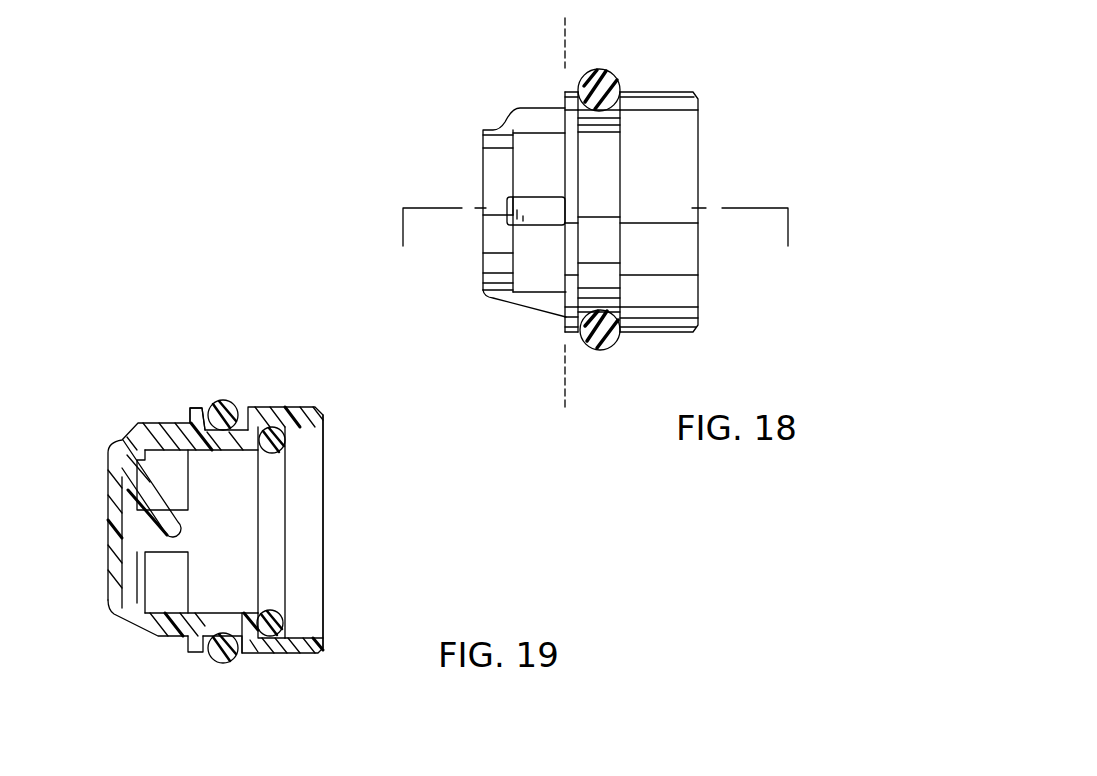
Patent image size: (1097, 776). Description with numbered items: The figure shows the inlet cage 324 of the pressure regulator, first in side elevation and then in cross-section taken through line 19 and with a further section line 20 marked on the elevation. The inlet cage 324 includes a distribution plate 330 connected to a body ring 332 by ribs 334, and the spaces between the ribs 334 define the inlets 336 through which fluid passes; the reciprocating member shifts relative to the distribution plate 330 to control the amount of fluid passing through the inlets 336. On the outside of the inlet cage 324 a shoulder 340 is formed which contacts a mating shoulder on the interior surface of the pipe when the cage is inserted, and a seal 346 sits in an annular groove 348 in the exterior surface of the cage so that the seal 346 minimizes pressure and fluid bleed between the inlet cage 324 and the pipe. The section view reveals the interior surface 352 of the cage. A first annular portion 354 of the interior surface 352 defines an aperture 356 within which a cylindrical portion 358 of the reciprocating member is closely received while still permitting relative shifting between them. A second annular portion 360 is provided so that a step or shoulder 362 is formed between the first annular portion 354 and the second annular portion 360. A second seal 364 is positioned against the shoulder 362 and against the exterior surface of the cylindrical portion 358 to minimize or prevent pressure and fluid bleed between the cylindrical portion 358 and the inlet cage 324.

In FIG. 18, the section line 19- 19 is at (599, 243).
In FIG. 18, the section line 20- 20 is at (565, 18).
In FIG. 18, the inlet cage 324 is at (663, 72).
In FIG. 19, the inlet cage 324 is at (267, 385).
In FIG. 18, the distribution plate 330 is at (480, 270).
In FIG. 19, the distribution plate 330 is at (107, 600).
In FIG. 18, the body ring 332 is at (661, 336).
In FIG. 19, the body ring 332 is at (302, 662).
In FIG. 18, the ribs 334 is at (537, 307).
In FIG. 19, the ribs 334 is at (143, 623).
In FIG. 18, the inlets 336 is at (541, 271).
In FIG. 18, the shoulder 340 is at (563, 95).
In FIG. 19, the shoulder 340 is at (187, 420).
In FIG. 19, the seal 346 is at (212, 400).
In FIG. 19, the annular groove 348 is at (290, 665).
In FIG. 19, the interior surface 352 is at (233, 603).
In FIG. 19, the first annular portion 354 is at (220, 453).
In FIG. 19, the aperture 356 is at (188, 492).
In FIG. 19, the cylindrical portion 358 is at (193, 637).
In FIG. 19, the second annular portion 360 is at (298, 657).
In FIG. 19, the shoulder 362 is at (260, 607).
In FIG. 19, the seal 364 is at (287, 447).